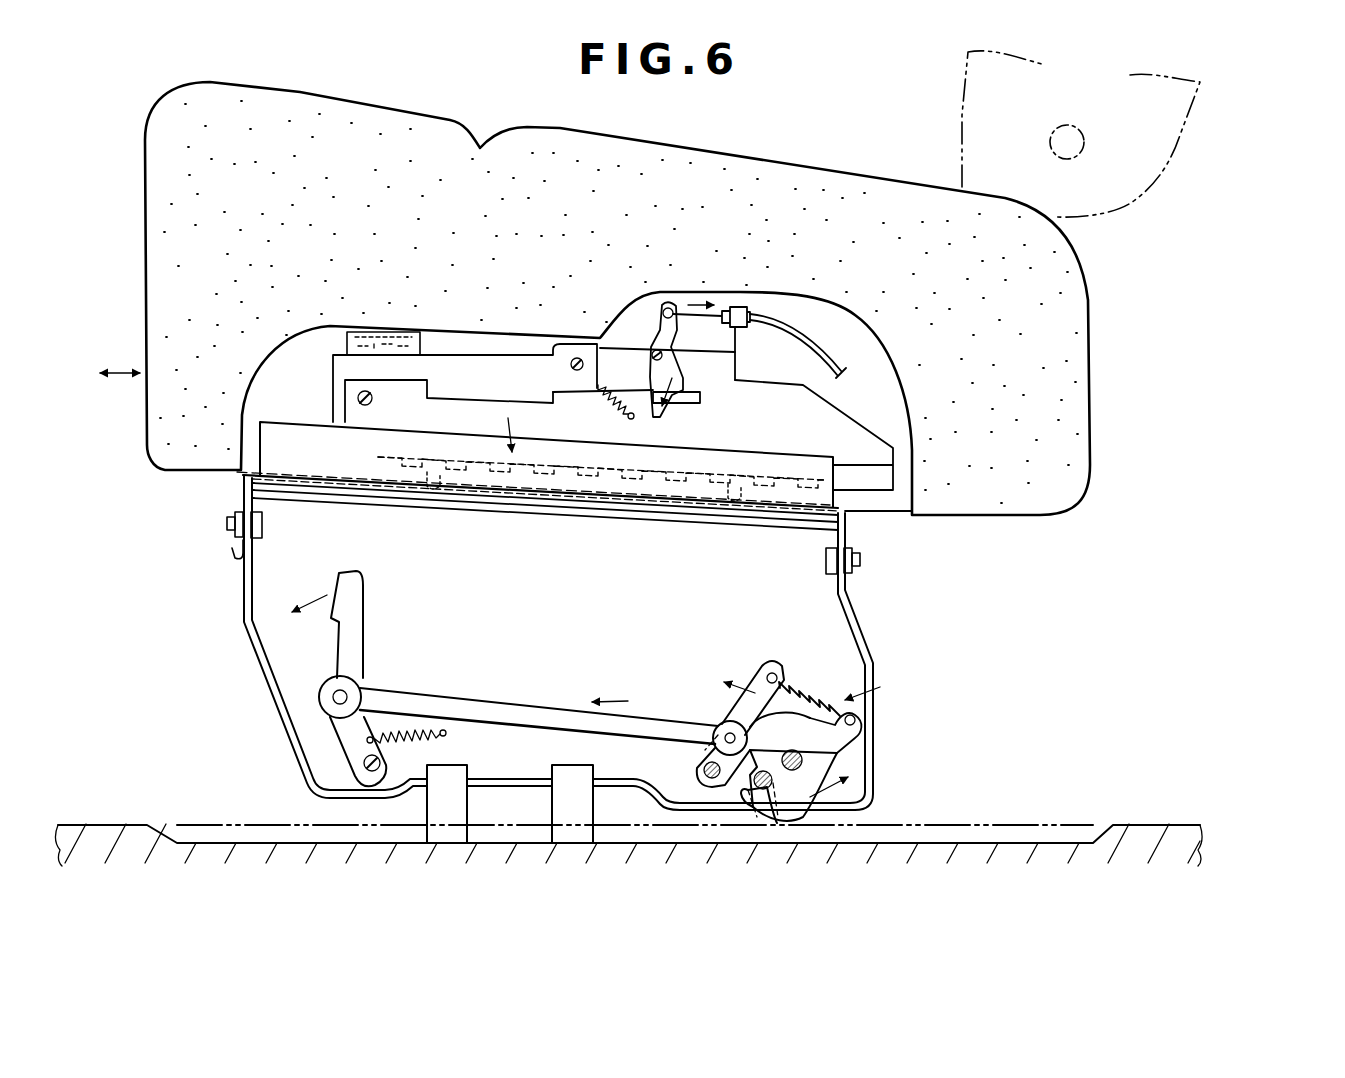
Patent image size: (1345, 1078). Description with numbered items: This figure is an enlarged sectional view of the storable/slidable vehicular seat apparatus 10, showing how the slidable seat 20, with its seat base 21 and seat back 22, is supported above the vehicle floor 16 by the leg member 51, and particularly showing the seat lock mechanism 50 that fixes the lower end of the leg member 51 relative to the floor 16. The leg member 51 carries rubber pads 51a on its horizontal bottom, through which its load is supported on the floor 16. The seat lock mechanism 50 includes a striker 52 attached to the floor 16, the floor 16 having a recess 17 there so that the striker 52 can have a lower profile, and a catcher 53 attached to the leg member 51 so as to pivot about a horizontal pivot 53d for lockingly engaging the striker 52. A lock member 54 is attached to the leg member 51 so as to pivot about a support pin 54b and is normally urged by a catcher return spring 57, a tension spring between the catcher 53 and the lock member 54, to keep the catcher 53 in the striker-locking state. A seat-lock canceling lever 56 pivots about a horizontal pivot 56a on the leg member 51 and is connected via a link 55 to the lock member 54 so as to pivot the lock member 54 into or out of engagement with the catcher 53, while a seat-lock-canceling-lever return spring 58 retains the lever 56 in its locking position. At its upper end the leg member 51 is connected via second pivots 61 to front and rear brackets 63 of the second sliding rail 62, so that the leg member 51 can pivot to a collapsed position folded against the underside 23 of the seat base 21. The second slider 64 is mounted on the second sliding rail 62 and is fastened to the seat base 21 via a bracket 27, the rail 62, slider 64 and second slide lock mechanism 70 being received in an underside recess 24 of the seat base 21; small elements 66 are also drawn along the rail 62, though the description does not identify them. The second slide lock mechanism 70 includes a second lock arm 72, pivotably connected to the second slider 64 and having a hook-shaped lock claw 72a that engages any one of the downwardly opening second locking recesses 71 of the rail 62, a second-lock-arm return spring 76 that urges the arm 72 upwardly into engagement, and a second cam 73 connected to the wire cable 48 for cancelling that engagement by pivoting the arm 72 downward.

The storable/slidable vehicular seat apparatus 10 is at (1245, 563).
The floor 16 is at (1150, 822).
The recess 17 is at (1020, 827).
The slidable seat 20 is at (1100, 405).
The seat base 21 is at (1125, 332).
The seat back 22 is at (1180, 135).
The underside 23 is at (1010, 518).
The recess 24 is at (880, 392).
The bracket 27 is at (343, 338).
The wire cable 48 is at (815, 347).
The seat lock mechanism 50 is at (882, 688).
The leg member 51 is at (865, 640).
The rubber pads 51a is at (448, 834).
The striker 52 is at (767, 813).
The catcher 53 is at (818, 753).
The horizontal pivot 53d is at (797, 770).
The lock member 54 is at (727, 713).
The support pin 54b is at (703, 778).
The link 55 is at (485, 705).
The seat-lock canceling lever 56 is at (347, 642).
The horizontal pivot 56a is at (360, 760).
The catcher return spring 57 is at (805, 680).
The seat-lock-canceling-lever return spring 58 is at (400, 752).
The second pivot 61 is at (230, 524).
The second sliding rail 62 is at (356, 463).
The brackets 63 is at (243, 483).
The second slider 64 is at (868, 445).
The pawl 66 is at (430, 480).
The second slide lock mechanism 70 is at (437, 382).
The second locking recesses 71 is at (556, 465).
The second lock arm 72 is at (457, 410).
The lock claw 72a is at (620, 482).
The second cam 73 is at (655, 330).
The second-lock-arm return spring 76 is at (598, 350).